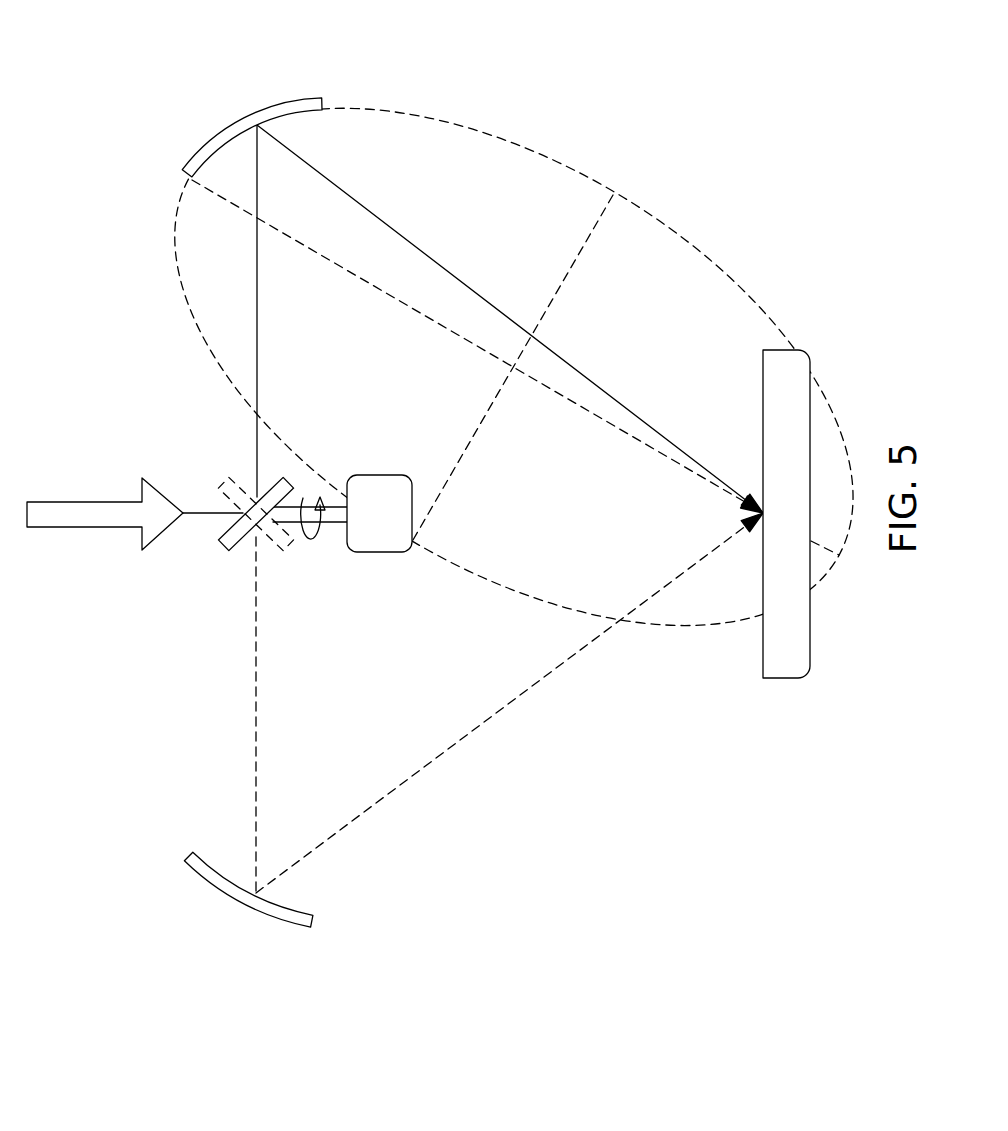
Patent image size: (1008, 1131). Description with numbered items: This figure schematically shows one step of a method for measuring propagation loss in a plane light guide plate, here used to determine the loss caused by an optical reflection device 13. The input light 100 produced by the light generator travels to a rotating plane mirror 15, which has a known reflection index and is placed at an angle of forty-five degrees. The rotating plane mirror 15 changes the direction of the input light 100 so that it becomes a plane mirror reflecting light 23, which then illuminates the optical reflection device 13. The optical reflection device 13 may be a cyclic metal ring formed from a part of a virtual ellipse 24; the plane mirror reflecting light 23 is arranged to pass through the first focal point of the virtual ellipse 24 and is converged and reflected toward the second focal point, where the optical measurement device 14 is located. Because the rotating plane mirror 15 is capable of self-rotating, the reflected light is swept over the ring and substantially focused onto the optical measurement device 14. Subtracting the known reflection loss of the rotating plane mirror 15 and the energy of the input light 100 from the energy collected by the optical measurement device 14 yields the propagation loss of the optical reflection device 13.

The optical reflection device 13 is at (215, 142).
The optical measurement device 14 is at (787, 678).
The rotating plane mirror 15 is at (327, 567).
The plane mirror reflecting light 23 is at (255, 348).
The virtual ellipse 24 is at (505, 140).
The input light 100 is at (72, 507).